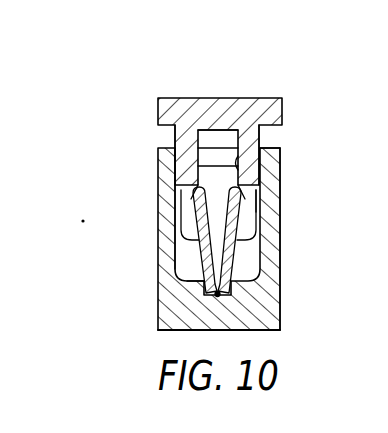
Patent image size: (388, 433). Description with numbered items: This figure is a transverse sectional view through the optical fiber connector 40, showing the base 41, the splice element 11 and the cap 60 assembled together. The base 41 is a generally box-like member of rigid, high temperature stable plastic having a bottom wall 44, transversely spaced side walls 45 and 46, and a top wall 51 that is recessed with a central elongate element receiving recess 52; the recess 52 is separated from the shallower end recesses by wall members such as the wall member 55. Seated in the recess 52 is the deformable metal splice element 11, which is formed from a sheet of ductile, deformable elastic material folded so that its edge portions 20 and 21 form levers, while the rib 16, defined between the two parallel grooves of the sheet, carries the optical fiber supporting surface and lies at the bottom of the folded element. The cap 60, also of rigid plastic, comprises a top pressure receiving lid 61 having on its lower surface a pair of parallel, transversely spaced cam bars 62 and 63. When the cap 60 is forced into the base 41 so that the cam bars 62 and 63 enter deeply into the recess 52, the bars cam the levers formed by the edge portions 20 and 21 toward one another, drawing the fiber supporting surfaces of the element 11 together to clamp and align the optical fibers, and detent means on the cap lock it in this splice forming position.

The cap 60 is at (163, 94).
The top pressure receiving lid 61 is at (183, 97).
The optical fiber connector 40 is at (231, 91).
The cam bar 63 is at (251, 140).
The cam bar 62 is at (188, 146).
The top wall 51 is at (272, 147).
The wall member 55 is at (238, 166).
The edge portion 20 is at (279, 197).
The central elongate element receiving recess 52 is at (281, 227).
The side wall 46 is at (246, 252).
The splice element 11 is at (270, 253).
The edge portion 21 is at (176, 240).
The side wall 45 is at (160, 280).
The base 41 is at (281, 312).
The bottom wall 44 is at (272, 332).
The rib 16 is at (218, 298).